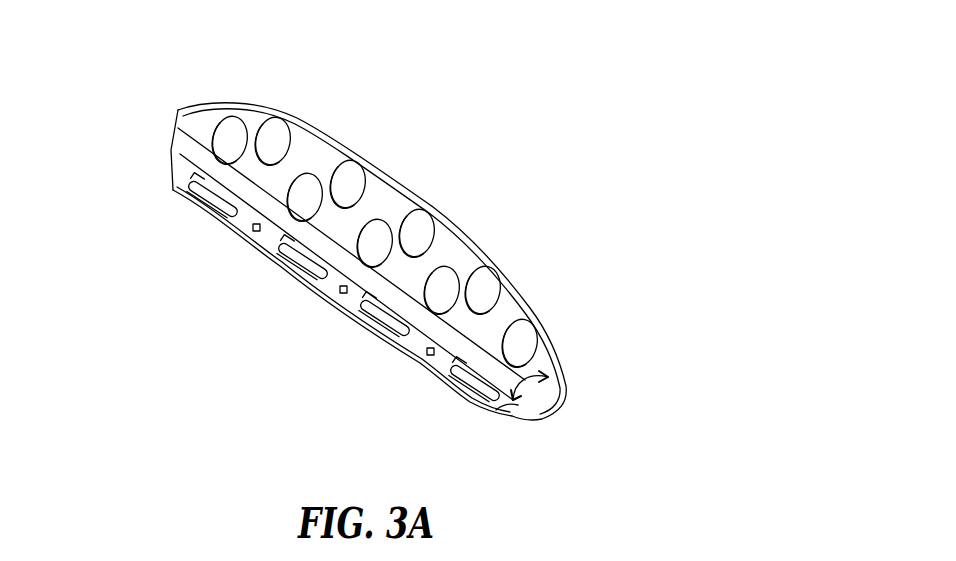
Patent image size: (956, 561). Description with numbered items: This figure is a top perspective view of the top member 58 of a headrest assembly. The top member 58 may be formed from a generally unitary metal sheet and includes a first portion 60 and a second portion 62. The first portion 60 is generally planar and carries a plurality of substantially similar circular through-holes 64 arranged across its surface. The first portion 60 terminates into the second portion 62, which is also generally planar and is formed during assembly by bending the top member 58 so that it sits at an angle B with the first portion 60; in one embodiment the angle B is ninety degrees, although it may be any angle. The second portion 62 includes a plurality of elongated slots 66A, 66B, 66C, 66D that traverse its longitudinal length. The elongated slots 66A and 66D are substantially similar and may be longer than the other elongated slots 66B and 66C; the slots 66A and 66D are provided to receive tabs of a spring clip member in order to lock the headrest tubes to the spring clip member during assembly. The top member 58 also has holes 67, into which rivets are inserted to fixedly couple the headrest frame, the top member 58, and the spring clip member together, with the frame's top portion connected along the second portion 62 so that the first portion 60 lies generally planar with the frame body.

The top member 58 is at (497, 263).
The first portion 60 is at (248, 117).
The second portion 62 is at (510, 406).
The circular through-holes 64 is at (345, 183).
The elongated slot 66A is at (232, 211).
The elongated slot 66B is at (324, 277).
The elongated slot 66C is at (404, 330).
The elongated slot 66D is at (492, 393).
The holes 67 is at (253, 228).
The angle B is at (505, 394).